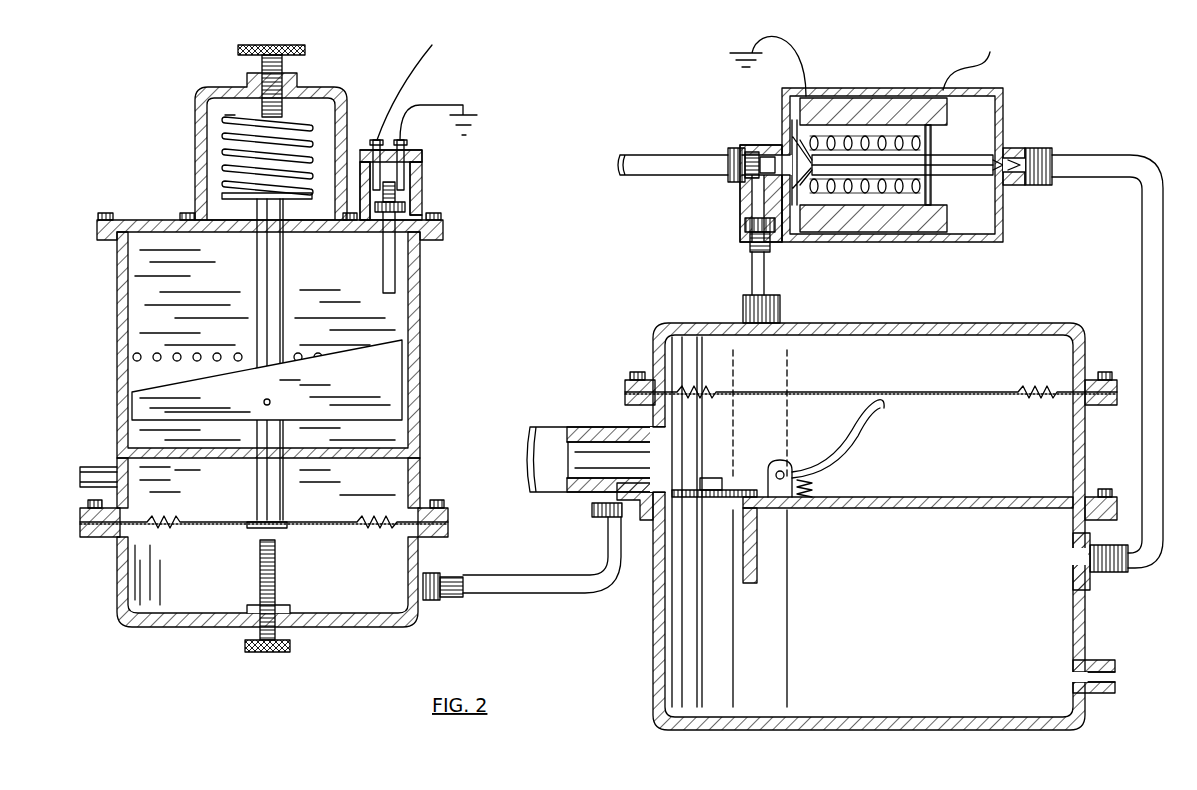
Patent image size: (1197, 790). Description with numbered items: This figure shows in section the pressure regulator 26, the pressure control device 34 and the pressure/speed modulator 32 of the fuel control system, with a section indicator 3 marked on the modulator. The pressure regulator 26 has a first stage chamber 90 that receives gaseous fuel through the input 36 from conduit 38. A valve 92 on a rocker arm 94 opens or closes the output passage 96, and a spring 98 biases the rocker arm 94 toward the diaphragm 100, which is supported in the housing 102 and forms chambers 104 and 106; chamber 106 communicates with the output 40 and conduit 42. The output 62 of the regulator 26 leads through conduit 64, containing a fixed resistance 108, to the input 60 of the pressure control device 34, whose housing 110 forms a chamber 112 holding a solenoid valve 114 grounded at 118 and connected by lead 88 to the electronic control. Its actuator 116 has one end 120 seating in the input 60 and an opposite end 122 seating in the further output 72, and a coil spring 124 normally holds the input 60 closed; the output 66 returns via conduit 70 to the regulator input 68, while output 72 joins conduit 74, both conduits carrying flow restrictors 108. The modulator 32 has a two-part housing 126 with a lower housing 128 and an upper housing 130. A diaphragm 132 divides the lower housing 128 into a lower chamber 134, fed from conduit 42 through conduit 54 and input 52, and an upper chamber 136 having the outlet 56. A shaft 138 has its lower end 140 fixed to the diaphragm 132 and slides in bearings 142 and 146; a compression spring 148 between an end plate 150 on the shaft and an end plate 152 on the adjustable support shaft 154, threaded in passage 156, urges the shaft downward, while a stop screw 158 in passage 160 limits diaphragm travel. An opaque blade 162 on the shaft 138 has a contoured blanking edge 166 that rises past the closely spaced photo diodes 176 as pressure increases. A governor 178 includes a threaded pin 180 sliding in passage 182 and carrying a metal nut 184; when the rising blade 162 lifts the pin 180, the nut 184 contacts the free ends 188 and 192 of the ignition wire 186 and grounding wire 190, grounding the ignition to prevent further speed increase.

The pressure regulator 26 is at (650, 653).
The pressure/speed modulator 32 is at (190, 139).
The pressure control device 34 is at (906, 87).
The input 36 is at (1073, 677).
The conduit 38 is at (1102, 695).
The output 40 is at (652, 486).
The conduit 42 is at (549, 427).
The input 52 is at (406, 598).
The conduit 54 is at (599, 542).
The outlet 56 is at (110, 466).
The input 60 is at (1016, 155).
The output 62 is at (1088, 556).
The conduit 64 is at (1148, 323).
The output 66 is at (758, 198).
The input 68 is at (743, 318).
The conduit 70 is at (740, 207).
The output 72 is at (777, 160).
The conduit 74 is at (668, 177).
The lead 88 is at (984, 64).
The first stage chamber 90 is at (882, 585).
The valve 92 is at (715, 482).
The rocker arm 94 is at (826, 444).
The output passage 96 is at (729, 522).
The spring 98 is at (808, 493).
The diaphragm 100 is at (883, 393).
The housing 102 is at (966, 323).
The chamber 104 is at (822, 360).
The chamber 106 is at (930, 485).
The fixed resistance 108 is at (737, 159).
The housing 110 is at (928, 92).
The chamber 112 is at (985, 107).
The solenoid valve 114 is at (812, 112).
The actuator 116 is at (857, 158).
The ground 118 is at (728, 56).
The end 120 is at (1000, 127).
The opposite end 122 is at (795, 143).
The coil spring 124 is at (873, 192).
The modulator housing 126 is at (428, 318).
The lower housing 128 is at (419, 504).
The upper housing 130 is at (421, 421).
The diaphragm 132 is at (338, 526).
The lower chamber 134 is at (267, 582).
The upper chamber 136 is at (355, 498).
The shaft 138 is at (265, 284).
The lower end 140 is at (257, 530).
The bearing 142 is at (283, 459).
The bearing 146 is at (256, 234).
The compression spring 148 is at (227, 118).
The end plate 150 is at (229, 192).
The end plate 152 is at (228, 115).
The adjustable support shaft 154 is at (305, 50).
The passage 156 is at (288, 72).
The stop screw 158 is at (260, 645).
The passage 160 is at (259, 613).
The blade 162 is at (390, 396).
The blanking edge 166 is at (193, 393).
The photo diodes 176 is at (320, 355).
The governor 178 is at (428, 157).
The threaded pin 180 is at (389, 248).
The passage 182 is at (445, 227).
The metal nut 184 is at (405, 206).
The ignition wire 186 is at (436, 70).
The free end 188 is at (365, 200).
The grounding wire 190 is at (420, 105).
The free end 192 is at (404, 184).
The section line 3 is at (287, 213).